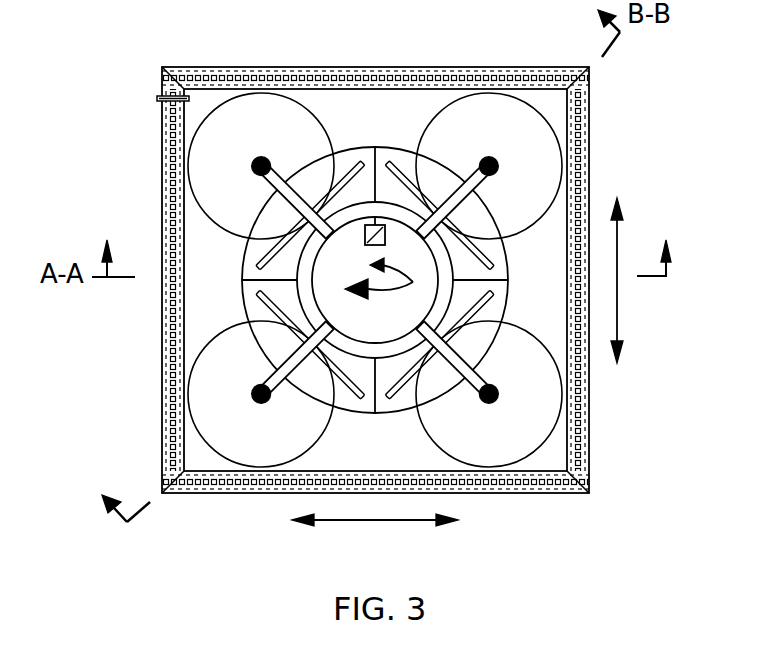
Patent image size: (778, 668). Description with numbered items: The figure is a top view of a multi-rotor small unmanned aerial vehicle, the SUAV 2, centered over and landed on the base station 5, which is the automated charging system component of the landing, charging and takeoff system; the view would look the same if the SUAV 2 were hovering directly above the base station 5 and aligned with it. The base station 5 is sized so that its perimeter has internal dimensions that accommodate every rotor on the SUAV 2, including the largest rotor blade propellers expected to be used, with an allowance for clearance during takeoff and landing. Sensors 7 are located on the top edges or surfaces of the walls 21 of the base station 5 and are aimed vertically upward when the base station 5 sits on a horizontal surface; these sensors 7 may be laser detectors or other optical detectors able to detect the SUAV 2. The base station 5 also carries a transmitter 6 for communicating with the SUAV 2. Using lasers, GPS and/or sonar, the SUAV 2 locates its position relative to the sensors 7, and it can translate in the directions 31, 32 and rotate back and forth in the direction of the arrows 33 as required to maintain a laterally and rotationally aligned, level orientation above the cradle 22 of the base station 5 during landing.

The SUAV 2 is at (316, 118).
The base station 5 is at (455, 67).
The transmitter 6 is at (163, 100).
The sensors 7 is at (578, 115).
The walls 21 is at (588, 167).
The cradle 22 is at (243, 298).
The direction 31 is at (617, 288).
The direction 32 is at (375, 533).
The arrows 33 is at (413, 282).